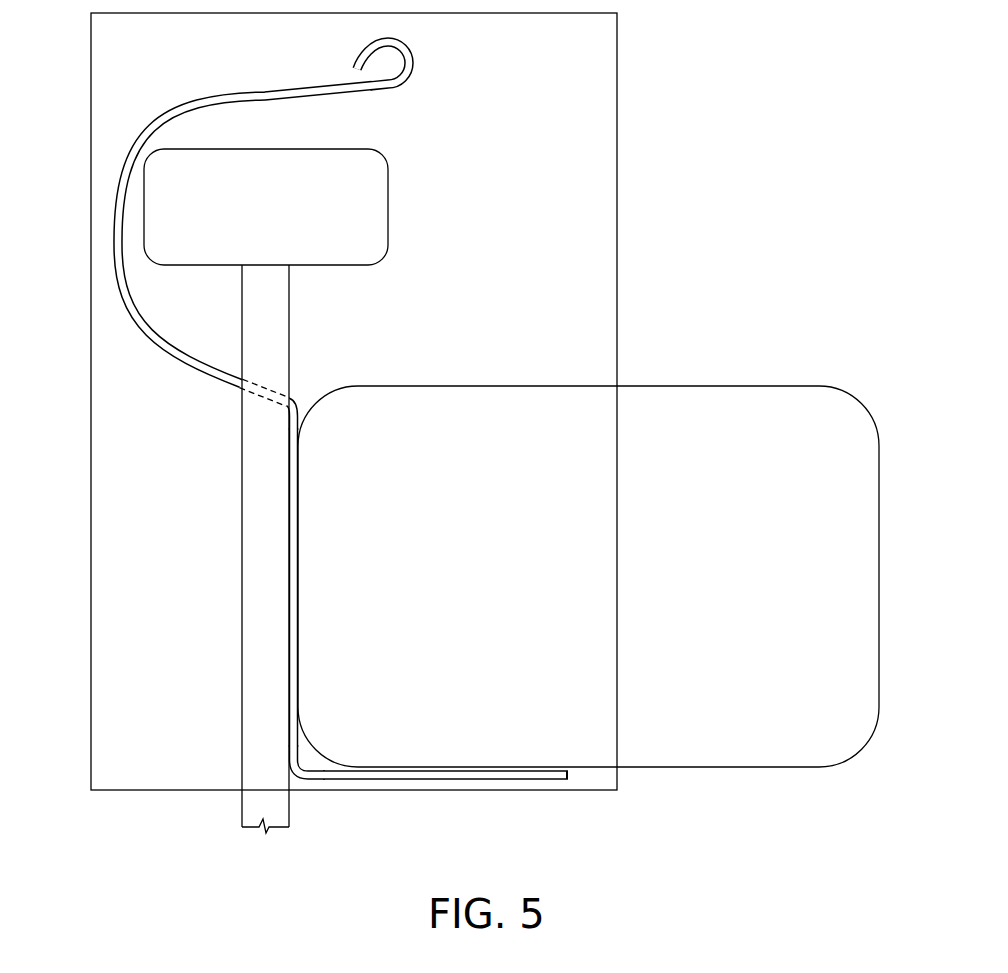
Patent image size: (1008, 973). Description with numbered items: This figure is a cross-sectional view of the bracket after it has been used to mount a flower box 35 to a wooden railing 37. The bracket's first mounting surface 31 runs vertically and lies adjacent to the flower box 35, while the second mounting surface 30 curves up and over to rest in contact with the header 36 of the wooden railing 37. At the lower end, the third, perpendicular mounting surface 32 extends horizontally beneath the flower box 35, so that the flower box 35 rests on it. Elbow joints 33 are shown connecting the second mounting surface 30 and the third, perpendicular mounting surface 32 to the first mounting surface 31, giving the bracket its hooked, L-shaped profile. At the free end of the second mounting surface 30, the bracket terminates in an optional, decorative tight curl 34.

The second mounting surface 30 is at (112, 246).
The first mounting surface 31 is at (287, 549).
The third, perpendicular mounting surface 32 is at (572, 781).
The elbow joints 33 is at (298, 414).
The decorative tight curl 34 is at (409, 46).
The flower box 35 is at (565, 482).
The header 36 is at (382, 206).
The wooden railing 37 is at (282, 311).